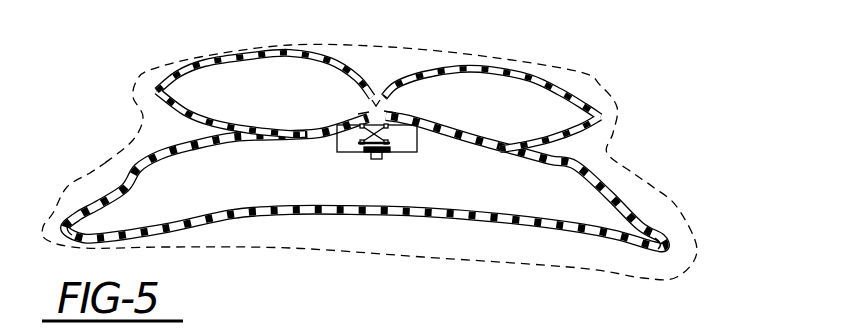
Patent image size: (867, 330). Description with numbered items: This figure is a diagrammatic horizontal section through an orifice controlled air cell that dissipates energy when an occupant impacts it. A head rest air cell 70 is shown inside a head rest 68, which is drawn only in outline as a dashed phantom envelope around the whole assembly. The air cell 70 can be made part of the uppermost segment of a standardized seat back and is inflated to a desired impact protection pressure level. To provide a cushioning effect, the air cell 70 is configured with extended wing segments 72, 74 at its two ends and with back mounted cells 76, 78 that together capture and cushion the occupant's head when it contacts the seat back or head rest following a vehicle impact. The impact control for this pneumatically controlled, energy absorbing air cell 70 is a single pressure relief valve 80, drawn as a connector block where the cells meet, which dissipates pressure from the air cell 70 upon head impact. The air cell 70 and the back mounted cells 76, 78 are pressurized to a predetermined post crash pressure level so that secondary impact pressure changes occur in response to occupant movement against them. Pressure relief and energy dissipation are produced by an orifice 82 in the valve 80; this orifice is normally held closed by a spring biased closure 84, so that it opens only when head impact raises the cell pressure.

The head rest 68 is at (596, 82).
The head rest air cell 70 is at (128, 163).
The extended wing segment 72 is at (97, 217).
The extended wing segment 74 is at (633, 233).
The back mounted cell 76 is at (217, 95).
The back mounted cell 78 is at (490, 97).
The pressure relief valve 80 is at (397, 161).
The orifice 82 is at (370, 150).
The spring biased closure 84 is at (387, 117).